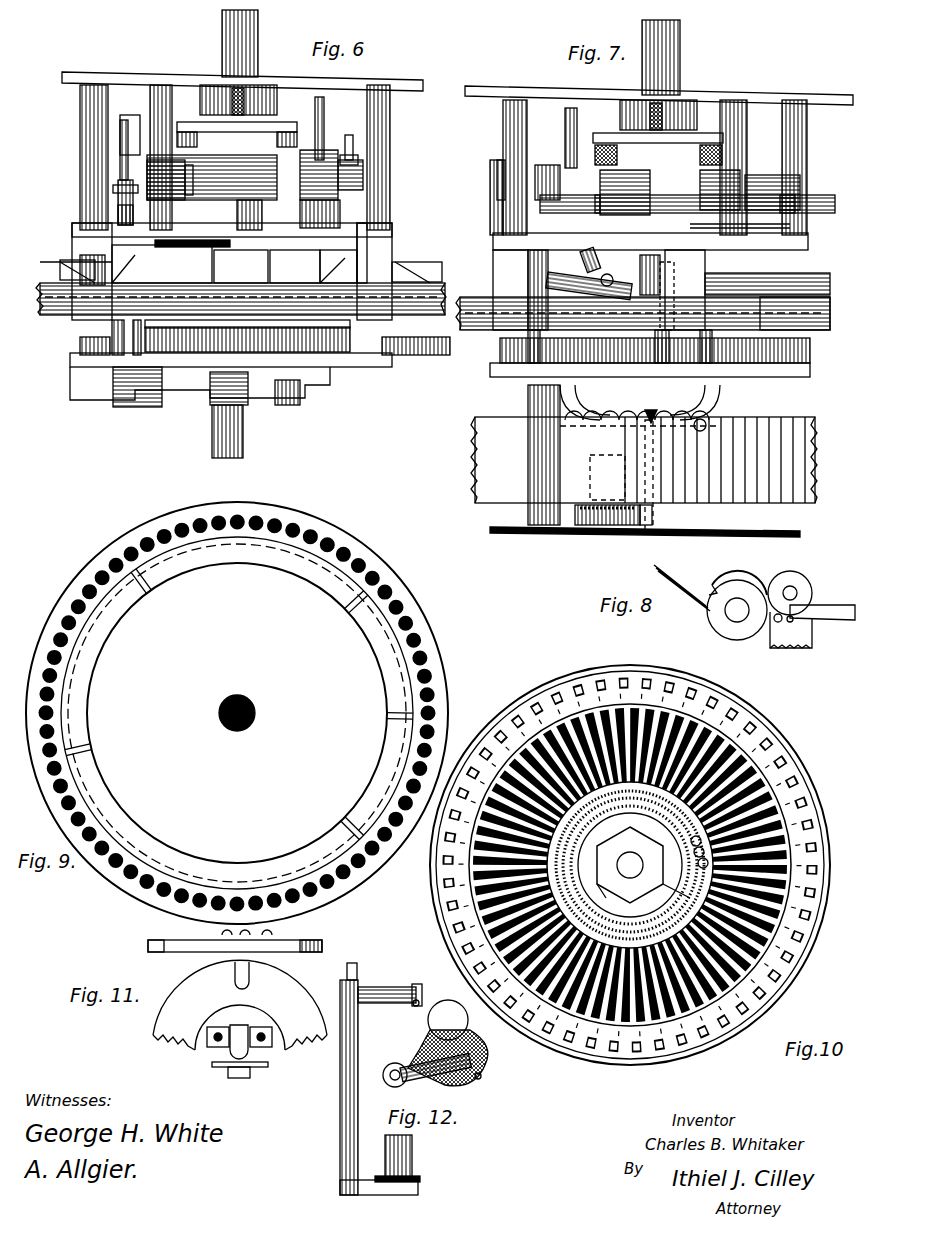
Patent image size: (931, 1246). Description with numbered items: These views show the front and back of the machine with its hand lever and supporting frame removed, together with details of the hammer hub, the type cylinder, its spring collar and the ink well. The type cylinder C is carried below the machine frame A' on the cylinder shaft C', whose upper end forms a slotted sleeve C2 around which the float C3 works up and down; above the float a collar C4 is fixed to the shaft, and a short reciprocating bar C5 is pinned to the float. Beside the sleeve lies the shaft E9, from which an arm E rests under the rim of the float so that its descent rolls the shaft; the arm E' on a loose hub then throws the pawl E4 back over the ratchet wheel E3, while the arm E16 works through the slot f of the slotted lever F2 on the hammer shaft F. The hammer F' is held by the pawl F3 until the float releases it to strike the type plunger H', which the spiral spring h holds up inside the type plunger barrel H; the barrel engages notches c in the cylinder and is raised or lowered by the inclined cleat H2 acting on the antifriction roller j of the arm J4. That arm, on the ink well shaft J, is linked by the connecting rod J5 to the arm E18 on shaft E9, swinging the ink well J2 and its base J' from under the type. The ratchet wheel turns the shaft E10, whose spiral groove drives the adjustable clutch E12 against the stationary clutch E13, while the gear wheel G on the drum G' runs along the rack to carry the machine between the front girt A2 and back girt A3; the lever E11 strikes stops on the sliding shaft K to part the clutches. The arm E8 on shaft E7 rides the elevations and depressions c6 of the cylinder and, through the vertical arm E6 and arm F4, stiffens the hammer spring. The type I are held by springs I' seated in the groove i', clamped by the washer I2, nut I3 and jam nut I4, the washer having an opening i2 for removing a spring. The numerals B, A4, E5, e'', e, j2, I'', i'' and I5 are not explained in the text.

In FIG. 6, the reciprocating bar C5 is at (258, 62).
In FIG. 7, the reciprocating bar C5 is at (671, 57).
In FIG. 6, the collar C4 is at (215, 94).
In FIG. 7, the collar C4 is at (658, 115).
In FIG. 6, the table plate B is at (360, 76).
In FIG. 7, the table plate B is at (659, 86).
In FIG. 6, the frame posts A4 is at (80, 100).
In FIG. 7, the frame posts A4 is at (503, 112).
In FIG. 6, the bracket E5 is at (140, 124).
In FIG. 6, the float C3 is at (296, 130).
In FIG. 7, the float C3 is at (658, 147).
In FIG. 6, the arm E16 is at (324, 110).
In FIG. 7, the arm E16 is at (567, 122).
In FIG. 6, the shaft E9 is at (350, 152).
In FIG. 7, the shaft E9 is at (512, 154).
In FIG. 6, the arm E is at (212, 177).
In FIG. 7, the arm E is at (729, 184).
In FIG. 6, the arm E' is at (170, 180).
In FIG. 6, the ratchet wheel E3 is at (118, 192).
In FIG. 6, the vertical arm E6 is at (118, 217).
In FIG. 6, the machine frame A' is at (240, 251).
In FIG. 6, the lever E11 is at (392, 230).
In FIG. 6, the shaft E10 is at (372, 228).
In FIG. 6, the pin e'' is at (74, 261).
In FIG. 6, the front girt A2 is at (196, 276).
In FIG. 6, the stationary clutch E13 is at (241, 266).
In FIG. 6, the adjustable clutch E12 is at (307, 266).
In FIG. 6, the gear wheel G is at (265, 355).
In FIG. 7, the gear wheel G is at (670, 350).
In FIG. 6, the drum G' is at (248, 358).
In FIG. 7, the drum G' is at (656, 381).
In FIG. 6, the back girt A3 is at (80, 350).
In FIG. 7, the back girt A3 is at (790, 318).
In FIG. 6, the shaft E7 is at (158, 418).
In FIG. 6, the arm E8 is at (244, 402).
In FIG. 6, the cylinder shaft C' is at (207, 431).
In FIG. 10, the cylinder shaft C' is at (630, 865).
In FIG. 6, the sleeve C2 is at (245, 205).
In FIG. 6, the arm E18 is at (320, 214).
In FIG. 7, the pinion e is at (674, 135).
In FIG. 7, the slotted lever F2 is at (548, 173).
In FIG. 7, the pawl F3 is at (625, 189).
In FIG. 8, the pawl F3 is at (716, 584).
In FIG. 7, the hammer shaft F is at (538, 207).
In FIG. 8, the hammer shaft F is at (781, 596).
In FIG. 7, the pawl E4 is at (806, 180).
In FIG. 7, the arm F4 is at (810, 207).
In FIG. 7, the type plunger H' is at (768, 233).
In FIG. 7, the sliding shaft K is at (818, 278).
In FIG. 7, the arm J4 is at (548, 290).
In FIG. 12, the arm J4 is at (410, 988).
In FIG. 7, the connecting rod J5 is at (597, 254).
In FIG. 7, the antifriction roller j is at (606, 272).
In FIG. 12, the antifriction roller j is at (410, 1004).
In FIG. 7, the ink well shaft J is at (531, 387).
In FIG. 12, the ink well shaft J is at (363, 1079).
In FIG. 7, the hammer F' is at (671, 269).
In FIG. 8, the hammer F' is at (676, 588).
In FIG. 7, the inclined cleat H2 is at (674, 284).
In FIG. 7, the type plunger barrel H is at (640, 360).
In FIG. 7, the notches c is at (706, 426).
In FIG. 7, the spiral spring h is at (650, 424).
In FIG. 7, the type cylinder C is at (644, 460).
In FIG. 9, the type cylinder C is at (237, 713).
In FIG. 7, the ink well J2 is at (607, 504).
In FIG. 12, the ink well J2 is at (412, 1146).
In FIG. 7, the type I is at (658, 476).
In FIG. 10, the type I is at (621, 874).
In FIG. 7, the base J' is at (607, 528).
In FIG. 12, the base J' is at (414, 1137).
In FIG. 7, the pin j2 is at (640, 526).
In FIG. 8, the slot f is at (812, 622).
In FIG. 9, the ring of pins I'' is at (245, 713).
In FIG. 9, the elevations and depressions c6 is at (292, 566).
In FIG. 10, the springs I' is at (610, 871).
In FIG. 10, the groove i' is at (630, 865).
In FIG. 10, the key i'' is at (643, 865).
In FIG. 11, the key i'' is at (243, 1002).
In FIG. 10, the jam nut I4 is at (630, 865).
In FIG. 10, the nut I3 is at (667, 897).
In FIG. 10, the arm I5 is at (612, 876).
In FIG. 11, the washer I2 is at (182, 950).
In FIG. 11, the opening i2 is at (250, 978).